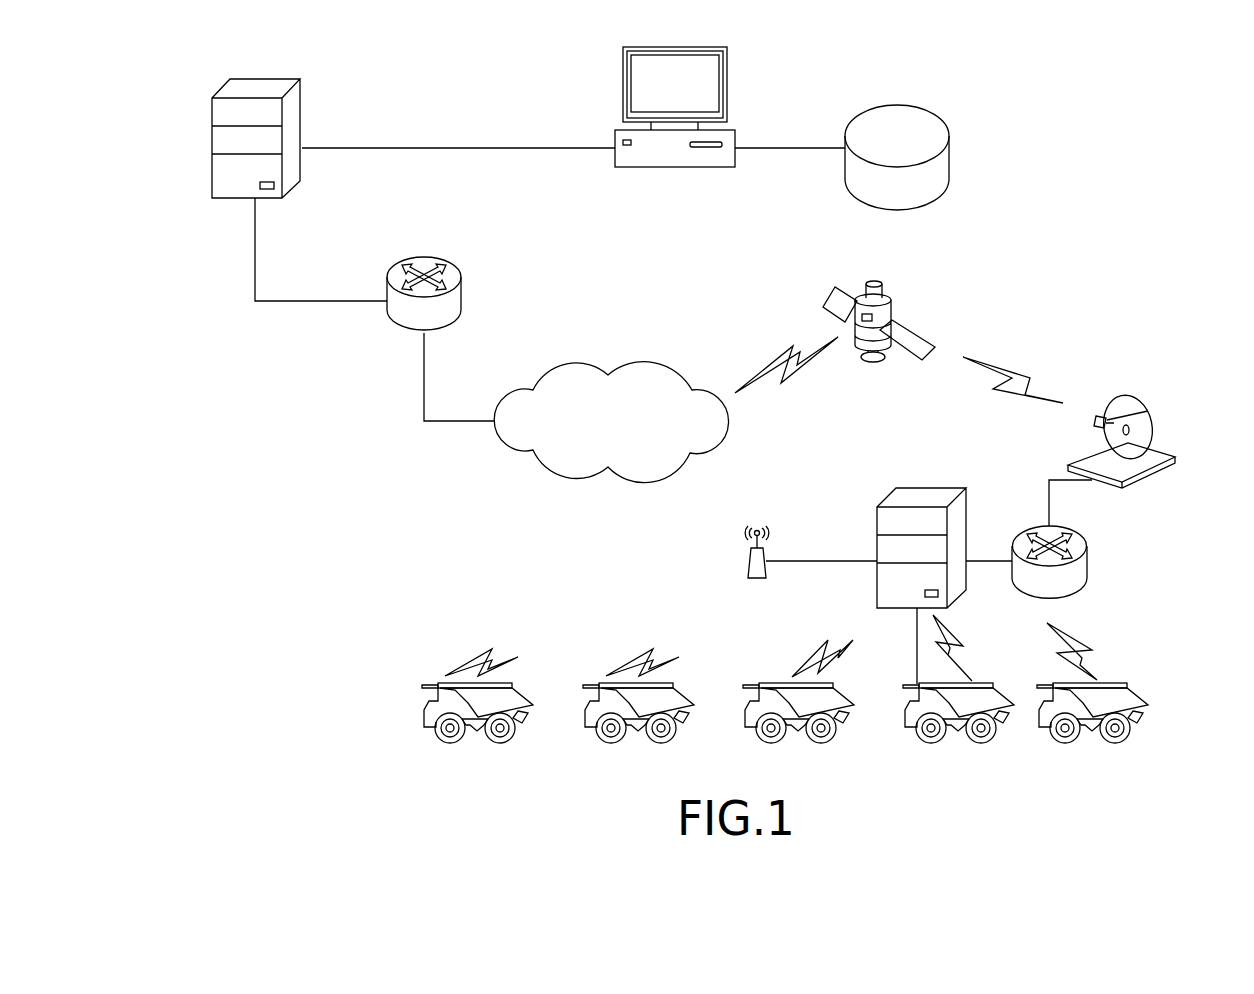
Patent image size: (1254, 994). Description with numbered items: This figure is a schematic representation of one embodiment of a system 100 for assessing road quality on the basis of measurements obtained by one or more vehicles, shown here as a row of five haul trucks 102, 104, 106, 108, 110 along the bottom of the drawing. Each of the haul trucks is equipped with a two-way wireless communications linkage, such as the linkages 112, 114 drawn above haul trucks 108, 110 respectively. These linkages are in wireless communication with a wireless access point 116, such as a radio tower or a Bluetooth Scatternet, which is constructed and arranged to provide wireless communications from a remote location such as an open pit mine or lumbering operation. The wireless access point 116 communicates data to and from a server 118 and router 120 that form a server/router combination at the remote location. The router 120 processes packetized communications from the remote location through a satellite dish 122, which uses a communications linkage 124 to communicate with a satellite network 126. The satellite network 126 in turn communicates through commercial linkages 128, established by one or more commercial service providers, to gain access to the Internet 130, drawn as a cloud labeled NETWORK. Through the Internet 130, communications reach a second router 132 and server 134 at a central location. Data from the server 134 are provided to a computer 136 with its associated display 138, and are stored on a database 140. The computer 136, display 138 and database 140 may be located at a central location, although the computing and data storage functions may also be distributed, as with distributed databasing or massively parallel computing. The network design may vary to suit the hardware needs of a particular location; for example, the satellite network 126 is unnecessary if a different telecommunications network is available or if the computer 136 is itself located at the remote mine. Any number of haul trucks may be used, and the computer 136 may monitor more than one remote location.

The system 100 is at (1150, 148).
The haul truck 102 is at (1140, 690).
The haul truck 104 is at (982, 683).
The haul truck 106 is at (855, 690).
The haul truck 108 is at (690, 688).
The haul truck 110 is at (522, 690).
The wireless communications linkage 112 is at (482, 658).
The wireless communications linkage 114 is at (643, 655).
The wireless access point 116 is at (748, 560).
The server 118 is at (910, 487).
The router 120 is at (1087, 563).
The satellite dish 122 is at (1152, 420).
The communications linkage 124 is at (1025, 372).
The satellite network 126 is at (890, 292).
The commercial linkage 128 is at (793, 347).
The Internet 130 is at (583, 362).
The router 132 is at (461, 290).
The server 134 is at (302, 108).
The computer 136 is at (737, 145).
The display 138 is at (728, 73).
The database 140 is at (940, 118).